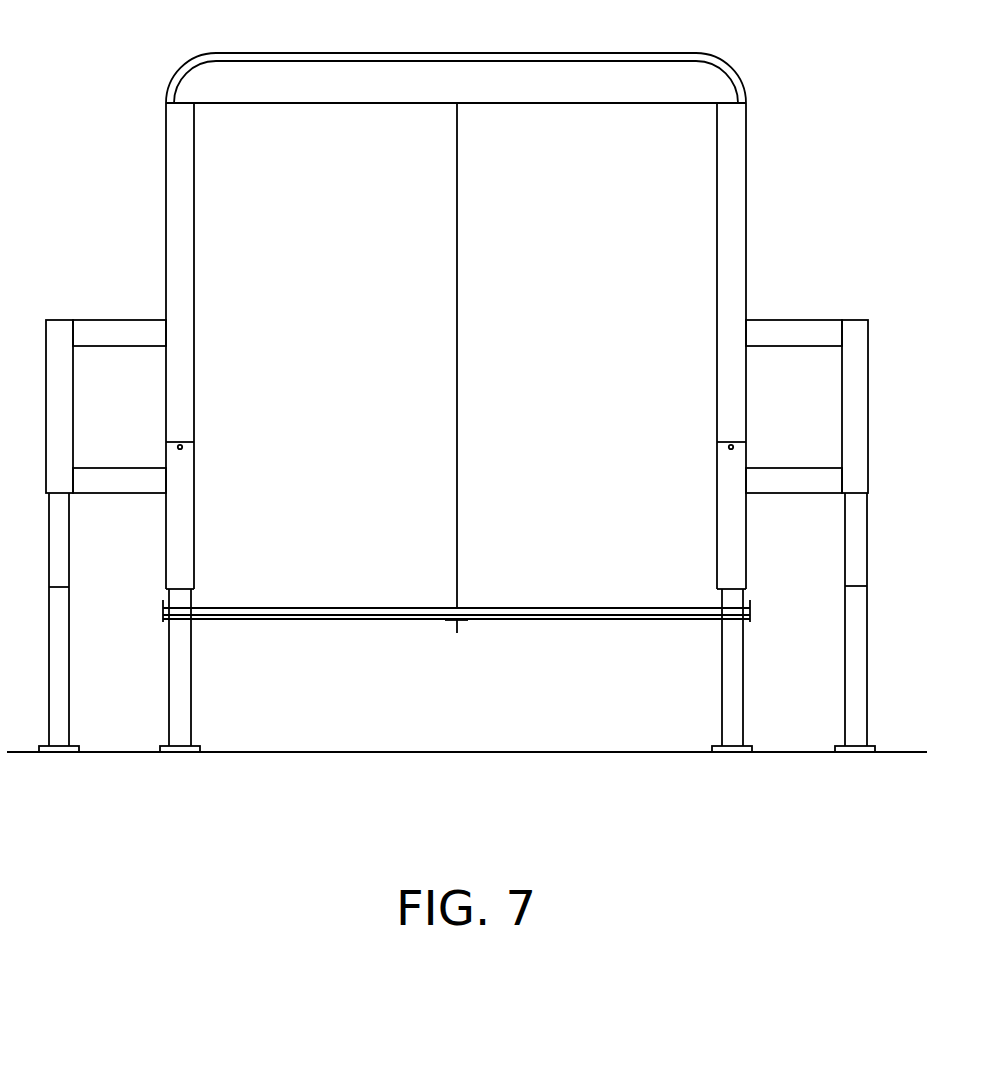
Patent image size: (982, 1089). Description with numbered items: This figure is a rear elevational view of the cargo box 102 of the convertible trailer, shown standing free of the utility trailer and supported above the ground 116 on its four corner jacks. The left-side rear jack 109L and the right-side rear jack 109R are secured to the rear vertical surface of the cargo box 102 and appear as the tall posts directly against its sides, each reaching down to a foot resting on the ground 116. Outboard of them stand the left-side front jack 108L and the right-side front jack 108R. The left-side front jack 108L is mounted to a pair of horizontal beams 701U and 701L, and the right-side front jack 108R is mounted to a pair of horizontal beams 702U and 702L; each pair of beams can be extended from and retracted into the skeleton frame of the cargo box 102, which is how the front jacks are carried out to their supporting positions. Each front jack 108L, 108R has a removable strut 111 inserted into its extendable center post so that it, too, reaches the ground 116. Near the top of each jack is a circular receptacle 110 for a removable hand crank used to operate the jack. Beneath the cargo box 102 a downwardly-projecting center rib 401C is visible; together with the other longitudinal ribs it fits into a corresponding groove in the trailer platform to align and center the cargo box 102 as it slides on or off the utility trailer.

The cargo box 102 is at (150, 52).
The left-side rear jack 109L is at (180, 560).
The right-side rear jack 109R is at (730, 560).
The left-side front jack 108L is at (57, 385).
The right-side front jack 108R is at (855, 386).
The upper horizontal beam 701U is at (127, 333).
The lower horizontal beam 701L is at (142, 483).
The upper horizontal beam 702U is at (787, 333).
The lower horizontal beam 702L is at (773, 483).
The receptacle 110 is at (165, 442).
The removable strut 111 is at (60, 663).
The center rib 401C is at (464, 634).
The ground 116 is at (466, 749).